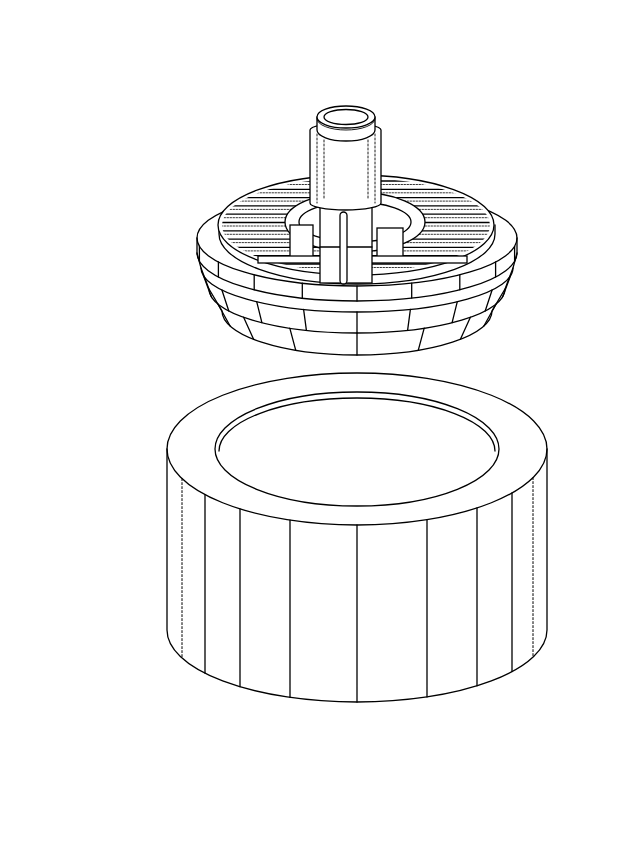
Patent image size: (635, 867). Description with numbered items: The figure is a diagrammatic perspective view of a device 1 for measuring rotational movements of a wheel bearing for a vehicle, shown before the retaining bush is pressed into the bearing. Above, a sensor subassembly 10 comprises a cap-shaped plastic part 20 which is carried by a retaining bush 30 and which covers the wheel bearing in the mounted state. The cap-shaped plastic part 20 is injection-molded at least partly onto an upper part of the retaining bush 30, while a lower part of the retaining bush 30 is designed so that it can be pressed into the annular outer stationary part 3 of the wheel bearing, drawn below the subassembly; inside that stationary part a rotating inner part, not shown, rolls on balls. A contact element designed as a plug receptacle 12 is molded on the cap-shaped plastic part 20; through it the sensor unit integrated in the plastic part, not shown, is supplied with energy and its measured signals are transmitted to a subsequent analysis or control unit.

The device 1 is at (156, 129).
The sensor subassembly 10 is at (260, 164).
The connection pipe 12 is at (379, 126).
The cap-shaped plastic part 20 is at (470, 197).
The retaining bush 30 is at (468, 325).
The stationary part 3 is at (193, 545).